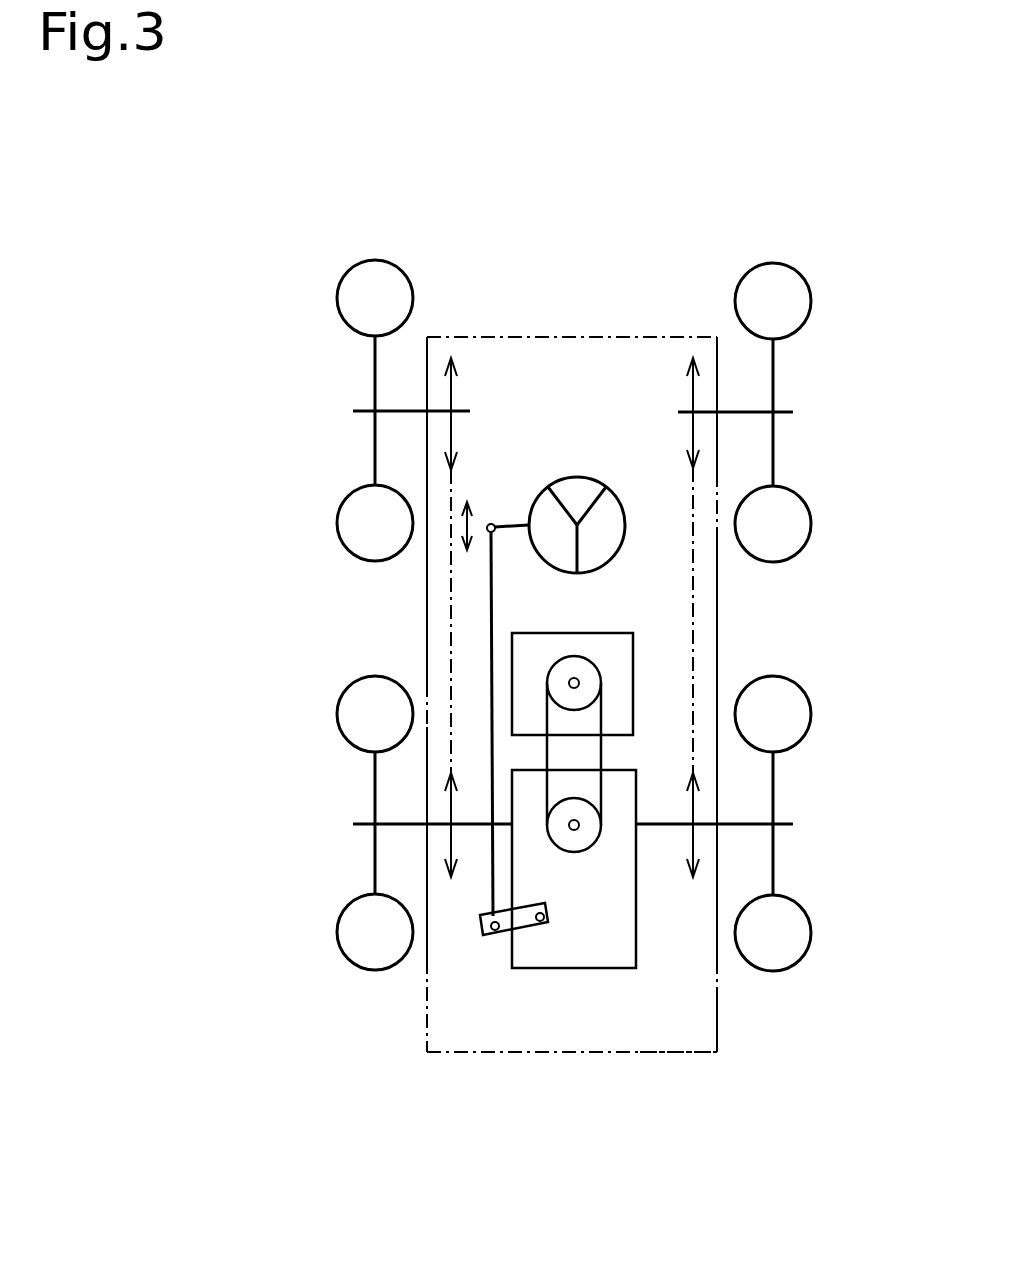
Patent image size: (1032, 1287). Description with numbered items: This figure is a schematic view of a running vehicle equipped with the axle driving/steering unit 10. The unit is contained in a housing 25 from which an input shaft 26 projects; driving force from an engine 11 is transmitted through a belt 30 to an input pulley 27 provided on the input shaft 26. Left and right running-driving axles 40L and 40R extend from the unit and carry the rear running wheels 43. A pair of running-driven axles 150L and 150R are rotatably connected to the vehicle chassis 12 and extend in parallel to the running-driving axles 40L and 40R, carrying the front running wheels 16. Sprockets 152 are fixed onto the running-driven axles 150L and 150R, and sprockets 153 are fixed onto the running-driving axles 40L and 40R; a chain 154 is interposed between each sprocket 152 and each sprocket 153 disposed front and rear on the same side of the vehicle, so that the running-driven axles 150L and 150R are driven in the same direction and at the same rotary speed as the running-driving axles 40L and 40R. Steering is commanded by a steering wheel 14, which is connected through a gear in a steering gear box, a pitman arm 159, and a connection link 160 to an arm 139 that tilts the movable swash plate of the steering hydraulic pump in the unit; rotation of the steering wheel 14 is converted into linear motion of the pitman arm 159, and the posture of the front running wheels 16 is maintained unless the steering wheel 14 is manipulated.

The axle driving/steering unit 10 is at (655, 1002).
The engine 11 is at (618, 633).
The vehicle chassis 12 is at (553, 337).
The steering wheel 14 is at (577, 478).
The front running wheels 16 is at (360, 262).
The housing 25 is at (582, 968).
The input shaft 26 is at (575, 830).
The input pulley 27 is at (593, 835).
The belt 30 is at (603, 752).
The left running-driving axle 40L is at (363, 823).
The right running-driving axle 40R is at (793, 822).
The rear running wheels 43 is at (337, 937).
The arm 139 is at (492, 933).
The left running-driven axle 150L is at (370, 411).
The right running-driven axle 150R is at (790, 410).
The sprockets 152 is at (456, 372).
The sprockets 153 is at (449, 868).
The chain 154 is at (452, 573).
The pitman arm 159 is at (513, 527).
The connection link 160 is at (490, 603).